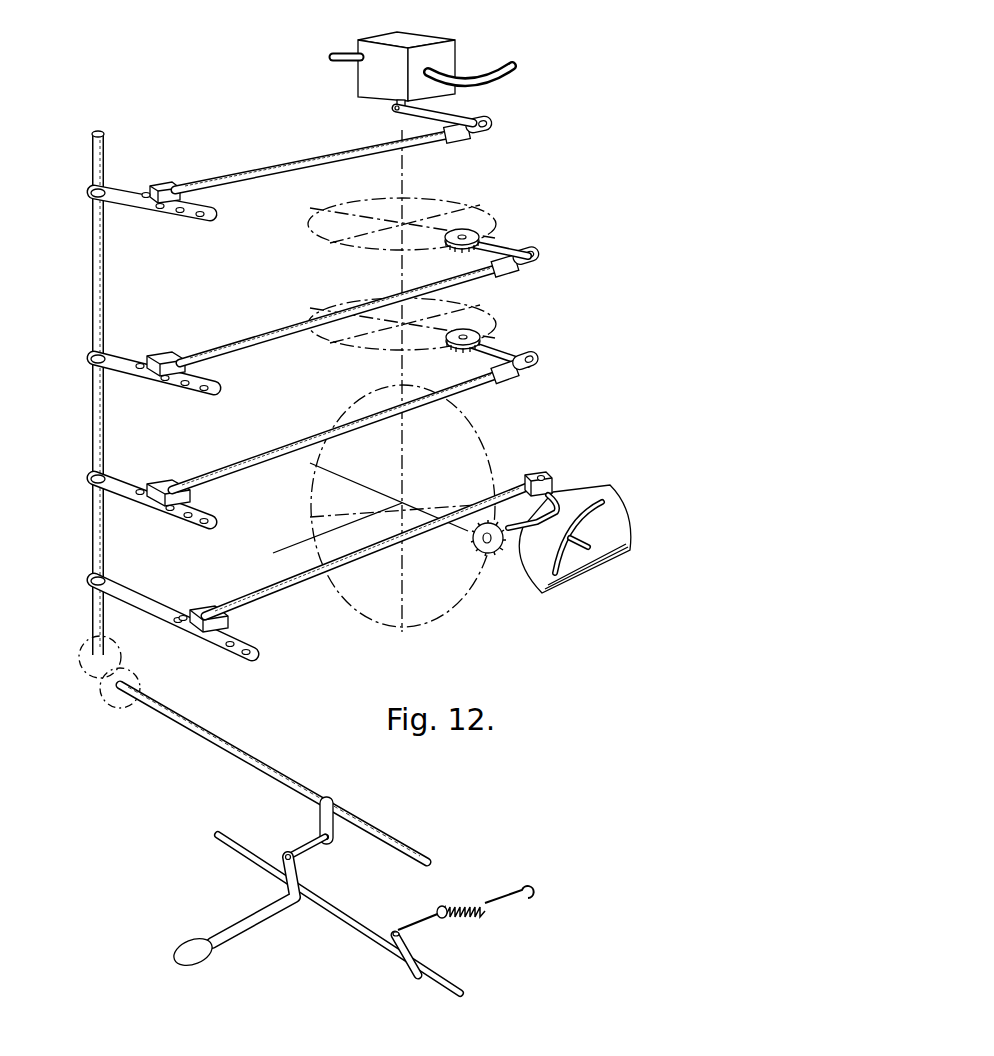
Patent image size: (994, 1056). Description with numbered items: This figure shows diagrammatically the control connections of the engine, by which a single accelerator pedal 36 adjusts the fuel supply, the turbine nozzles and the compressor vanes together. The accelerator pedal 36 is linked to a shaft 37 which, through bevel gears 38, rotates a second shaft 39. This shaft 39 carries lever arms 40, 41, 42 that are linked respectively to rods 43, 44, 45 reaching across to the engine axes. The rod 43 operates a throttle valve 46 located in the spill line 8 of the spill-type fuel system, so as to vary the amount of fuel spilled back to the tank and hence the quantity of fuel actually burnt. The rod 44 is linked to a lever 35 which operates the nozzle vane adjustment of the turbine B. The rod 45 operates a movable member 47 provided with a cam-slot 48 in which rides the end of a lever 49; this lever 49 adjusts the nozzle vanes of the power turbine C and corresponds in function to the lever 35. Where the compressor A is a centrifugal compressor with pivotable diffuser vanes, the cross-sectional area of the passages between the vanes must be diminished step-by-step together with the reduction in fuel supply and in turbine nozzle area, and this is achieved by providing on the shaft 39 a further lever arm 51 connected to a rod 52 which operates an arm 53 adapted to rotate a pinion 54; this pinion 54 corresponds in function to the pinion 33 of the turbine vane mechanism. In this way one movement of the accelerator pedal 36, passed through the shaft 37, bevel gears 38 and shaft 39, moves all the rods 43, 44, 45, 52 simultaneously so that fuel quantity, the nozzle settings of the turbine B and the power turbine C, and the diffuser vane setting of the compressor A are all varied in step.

The spill line 8 is at (343, 52).
The throttle valve 46 is at (425, 40).
The rod 43 is at (267, 168).
The lever arm 40 is at (122, 188).
The further lever arm 51 is at (130, 358).
The rod 52 is at (252, 341).
The shaft 39 is at (105, 417).
The lever arm 41 is at (132, 483).
The rod 44 is at (254, 466).
The lever arm 42 is at (157, 602).
The rod 45 is at (282, 592).
The bevel gears 38 is at (107, 672).
The shaft 37 is at (277, 777).
The accelerator pedal 36 is at (193, 953).
The arm 53 is at (503, 253).
The pinion 54 is at (455, 247).
The pinion 33 is at (481, 338).
The lever 35 is at (487, 355).
The lever 49 is at (520, 540).
The cam-slot 48 is at (553, 580).
The movable member 47 is at (606, 568).
The compressor A is at (482, 223).
The turbine B is at (484, 323).
The power turbine C is at (467, 450).